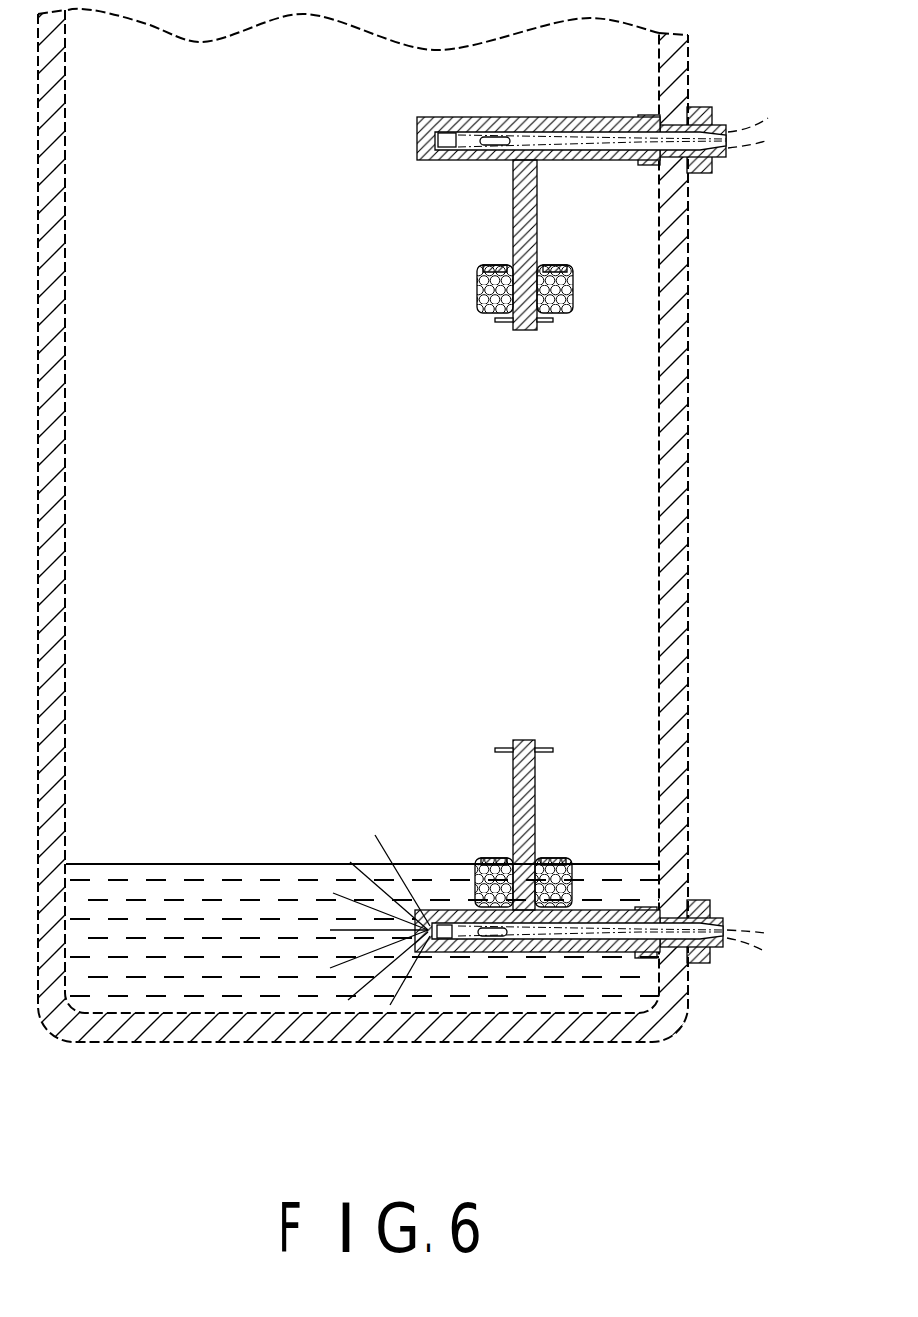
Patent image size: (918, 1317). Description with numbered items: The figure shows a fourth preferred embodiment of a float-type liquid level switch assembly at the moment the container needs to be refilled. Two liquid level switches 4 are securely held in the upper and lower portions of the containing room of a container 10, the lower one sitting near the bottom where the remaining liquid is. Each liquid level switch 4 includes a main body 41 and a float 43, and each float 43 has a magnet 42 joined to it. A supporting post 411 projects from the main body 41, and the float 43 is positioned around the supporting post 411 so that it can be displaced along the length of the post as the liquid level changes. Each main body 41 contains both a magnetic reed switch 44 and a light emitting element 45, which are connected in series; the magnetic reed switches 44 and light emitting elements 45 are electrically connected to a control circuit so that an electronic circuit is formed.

The liquid level switch 4 is at (552, 232).
The container 10 is at (689, 375).
The main body 41 is at (603, 910).
The magnet 42 is at (598, 910).
The float 43 is at (572, 872).
The magnetic reed switch 44 is at (464, 922).
The light emitting element 45 is at (391, 873).
The supporting post 411 is at (536, 792).